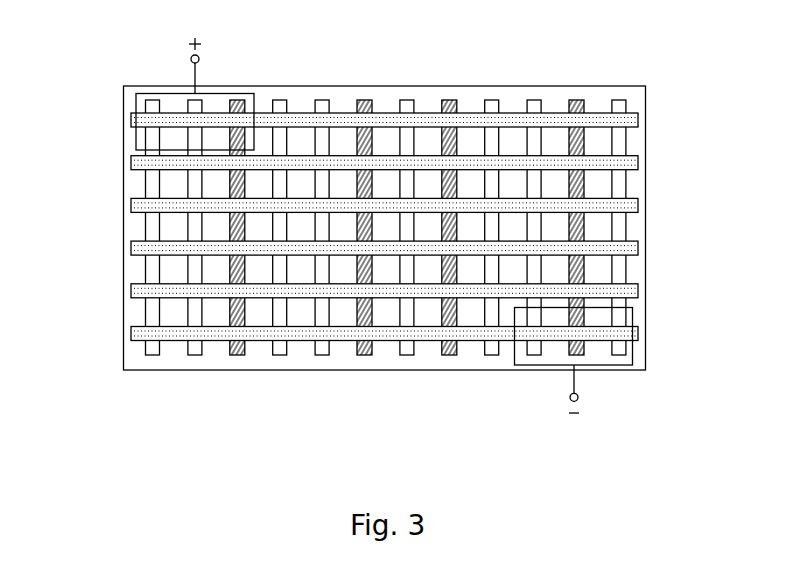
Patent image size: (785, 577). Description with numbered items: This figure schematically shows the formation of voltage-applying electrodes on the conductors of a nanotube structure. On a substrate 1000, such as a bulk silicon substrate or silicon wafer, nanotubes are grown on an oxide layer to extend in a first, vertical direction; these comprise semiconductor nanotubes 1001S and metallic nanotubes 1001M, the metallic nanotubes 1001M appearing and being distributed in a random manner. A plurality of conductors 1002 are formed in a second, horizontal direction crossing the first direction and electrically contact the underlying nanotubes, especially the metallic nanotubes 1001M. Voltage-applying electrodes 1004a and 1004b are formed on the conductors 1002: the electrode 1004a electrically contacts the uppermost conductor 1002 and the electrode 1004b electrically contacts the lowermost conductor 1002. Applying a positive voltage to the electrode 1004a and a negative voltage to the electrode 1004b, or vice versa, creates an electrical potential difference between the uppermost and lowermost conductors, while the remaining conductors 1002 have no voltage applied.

The substrate 1000 is at (640, 357).
The metallic nanotubes 1001M is at (233, 102).
The semiconductor nanotubes 1001S is at (620, 102).
The conductors 1002 is at (720, 178).
The voltage-applying electrode 1004a is at (134, 140).
The voltage-applying electrode 1004b is at (619, 366).